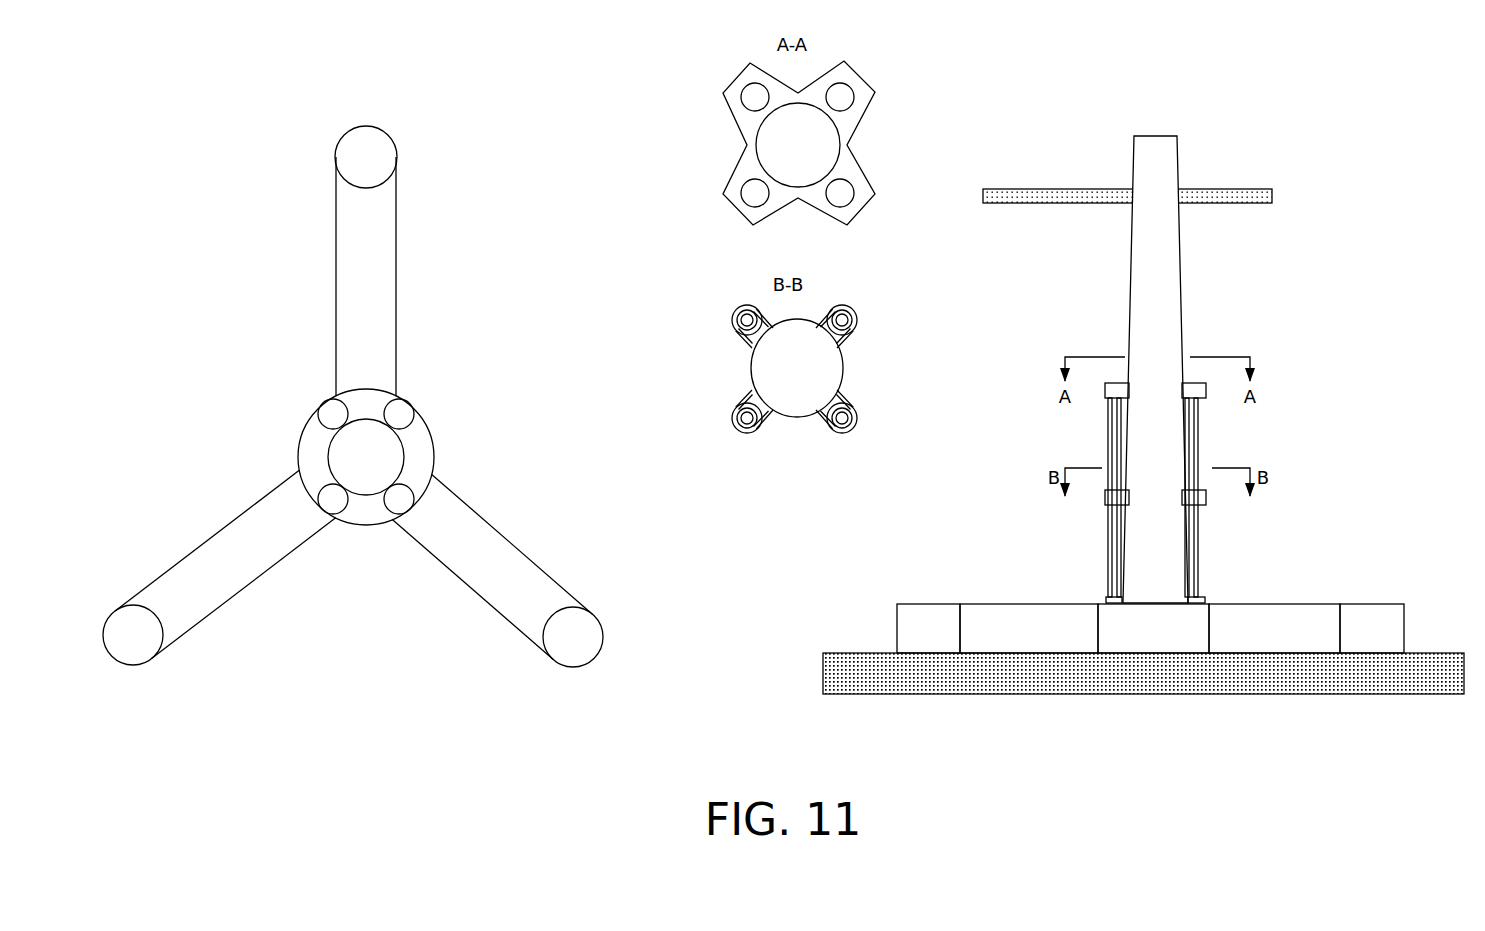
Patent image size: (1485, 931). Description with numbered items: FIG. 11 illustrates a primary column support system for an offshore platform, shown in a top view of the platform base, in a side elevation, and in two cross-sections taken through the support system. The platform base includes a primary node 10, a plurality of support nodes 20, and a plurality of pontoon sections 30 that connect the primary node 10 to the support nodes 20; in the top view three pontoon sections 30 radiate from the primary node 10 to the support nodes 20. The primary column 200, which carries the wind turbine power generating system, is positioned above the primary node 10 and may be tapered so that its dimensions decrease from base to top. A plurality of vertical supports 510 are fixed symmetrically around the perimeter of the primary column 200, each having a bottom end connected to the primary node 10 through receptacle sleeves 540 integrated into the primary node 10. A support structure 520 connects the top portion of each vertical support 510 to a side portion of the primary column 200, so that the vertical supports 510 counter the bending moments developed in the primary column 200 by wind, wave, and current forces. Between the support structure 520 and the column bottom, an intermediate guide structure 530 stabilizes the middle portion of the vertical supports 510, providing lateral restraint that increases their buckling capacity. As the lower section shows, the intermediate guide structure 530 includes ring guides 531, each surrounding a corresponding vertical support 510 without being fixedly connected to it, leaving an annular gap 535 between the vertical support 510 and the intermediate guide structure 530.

The primary node 10 is at (366, 533).
The support node 20 is at (136, 656).
The pontoon section 30 is at (510, 579).
The primary column 200 is at (780, 157).
The vertical support 510 is at (415, 485).
The support structure 520 is at (860, 72).
The intermediate guide structure 530 is at (1207, 497).
The ring guide 531 is at (735, 422).
The annular space or gap 535 is at (858, 415).
The receptacle sleeve 540 is at (1206, 593).